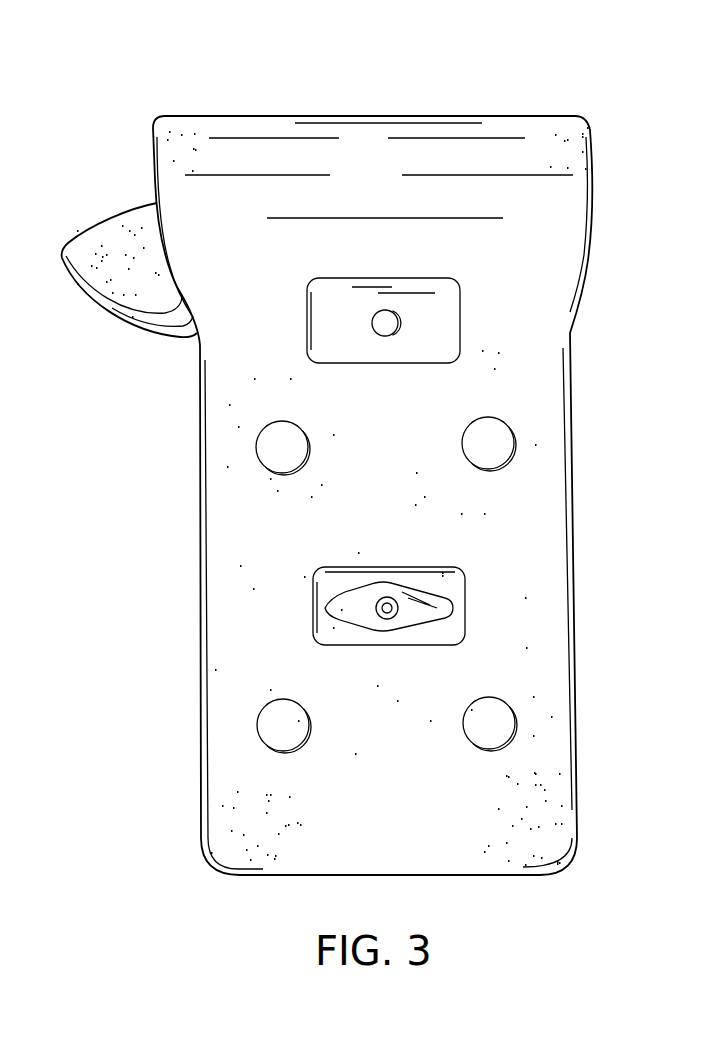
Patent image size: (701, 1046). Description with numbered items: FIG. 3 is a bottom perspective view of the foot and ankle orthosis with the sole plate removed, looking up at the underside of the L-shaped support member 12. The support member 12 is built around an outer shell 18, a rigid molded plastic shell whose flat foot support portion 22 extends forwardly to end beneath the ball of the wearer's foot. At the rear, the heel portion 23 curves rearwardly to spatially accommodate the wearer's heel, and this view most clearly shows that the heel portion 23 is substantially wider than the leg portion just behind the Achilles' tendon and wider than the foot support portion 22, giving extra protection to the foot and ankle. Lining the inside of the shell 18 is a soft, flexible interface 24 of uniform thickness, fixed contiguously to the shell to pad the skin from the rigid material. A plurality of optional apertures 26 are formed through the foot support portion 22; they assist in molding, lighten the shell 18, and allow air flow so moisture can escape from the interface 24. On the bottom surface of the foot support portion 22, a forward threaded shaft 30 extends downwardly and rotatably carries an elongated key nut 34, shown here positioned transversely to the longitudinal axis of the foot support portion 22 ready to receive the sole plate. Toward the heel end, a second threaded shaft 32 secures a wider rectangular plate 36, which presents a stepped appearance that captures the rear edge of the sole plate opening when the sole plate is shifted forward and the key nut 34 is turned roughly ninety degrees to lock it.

The L-shaped foot and ankle support member 12 is at (618, 568).
The outer shell 18 is at (220, 536).
The foot support portion 22 is at (415, 497).
The heel portion 23 is at (505, 142).
The lining or interface 24 is at (275, 450).
The apertures 26 is at (512, 458).
The threaded shaft 30 is at (390, 598).
The threaded shaft 32 is at (388, 320).
The key nut 34 is at (353, 603).
The rectangular plate 36 is at (447, 302).